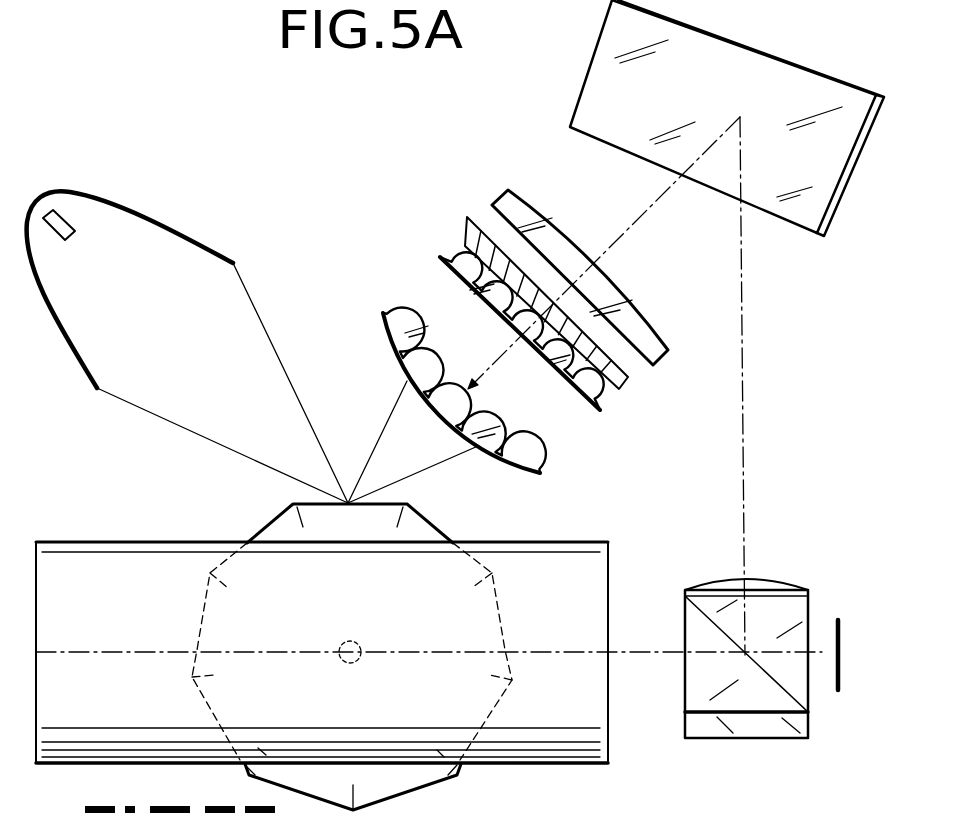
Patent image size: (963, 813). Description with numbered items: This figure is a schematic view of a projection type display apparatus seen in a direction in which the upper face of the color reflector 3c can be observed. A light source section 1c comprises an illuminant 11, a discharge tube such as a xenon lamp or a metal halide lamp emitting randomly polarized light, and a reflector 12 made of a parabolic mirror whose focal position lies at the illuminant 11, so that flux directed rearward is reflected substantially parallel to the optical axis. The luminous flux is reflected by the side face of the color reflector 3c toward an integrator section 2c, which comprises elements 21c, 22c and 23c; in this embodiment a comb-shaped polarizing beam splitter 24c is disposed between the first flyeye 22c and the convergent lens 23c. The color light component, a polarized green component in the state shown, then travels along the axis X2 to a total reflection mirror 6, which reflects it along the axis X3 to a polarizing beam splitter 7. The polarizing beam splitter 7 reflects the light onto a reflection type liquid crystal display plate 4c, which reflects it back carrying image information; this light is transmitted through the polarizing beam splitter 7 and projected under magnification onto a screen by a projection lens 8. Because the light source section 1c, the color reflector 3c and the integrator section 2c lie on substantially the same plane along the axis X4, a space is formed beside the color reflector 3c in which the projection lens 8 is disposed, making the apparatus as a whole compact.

The light source section 1c is at (195, 216).
The illuminant 11 is at (63, 241).
The reflector 12 is at (66, 338).
The integrator section 2c is at (430, 216).
The integrator section element 21c is at (384, 311).
The first flyeye 22c is at (440, 256).
The convergent lens 23c is at (491, 205).
The comb-shaped polarizing beam splitter 24c is at (632, 384).
The color reflector 3c is at (432, 524).
The projection lens 8 is at (127, 565).
The total reflection mirror 6 is at (613, 60).
The polarizing beam splitter 7 is at (772, 731).
The reflection type liquid crystal display plate 4c is at (838, 619).
The optical axis X2 is at (630, 228).
The optical axis X3 is at (748, 351).
The optical axis X4 is at (640, 656).